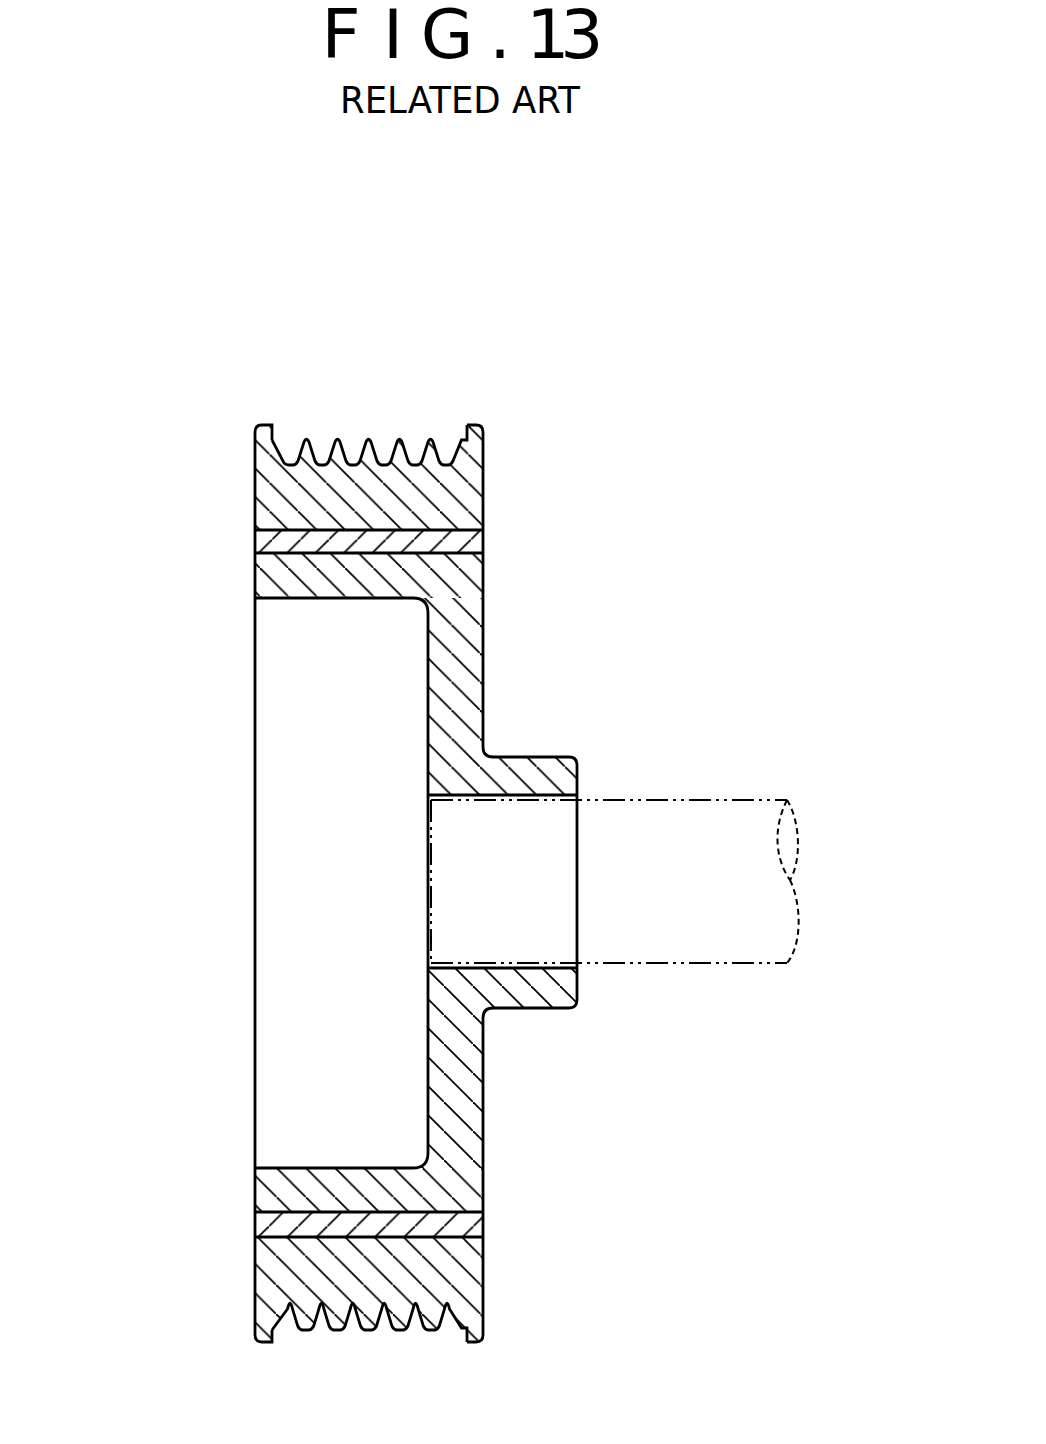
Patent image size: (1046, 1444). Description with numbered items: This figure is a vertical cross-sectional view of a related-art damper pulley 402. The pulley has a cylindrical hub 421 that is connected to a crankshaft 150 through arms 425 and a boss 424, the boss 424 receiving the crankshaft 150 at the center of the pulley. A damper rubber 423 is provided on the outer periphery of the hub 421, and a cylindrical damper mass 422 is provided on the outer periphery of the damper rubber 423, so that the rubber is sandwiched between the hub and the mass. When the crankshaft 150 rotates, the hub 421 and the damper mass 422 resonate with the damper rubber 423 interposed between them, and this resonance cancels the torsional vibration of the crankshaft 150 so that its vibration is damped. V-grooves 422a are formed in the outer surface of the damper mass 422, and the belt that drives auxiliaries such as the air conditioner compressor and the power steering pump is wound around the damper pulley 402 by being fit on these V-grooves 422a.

The damper pulley 402 is at (498, 372).
The cylindrical hub 421 is at (300, 600).
The cylindrical damper mass 422 is at (262, 499).
The V-grooves 422a is at (415, 437).
The damper rubber 423 is at (262, 543).
The boss 424 is at (553, 757).
The arms 425 is at (484, 596).
The crankshaft 150 is at (787, 800).